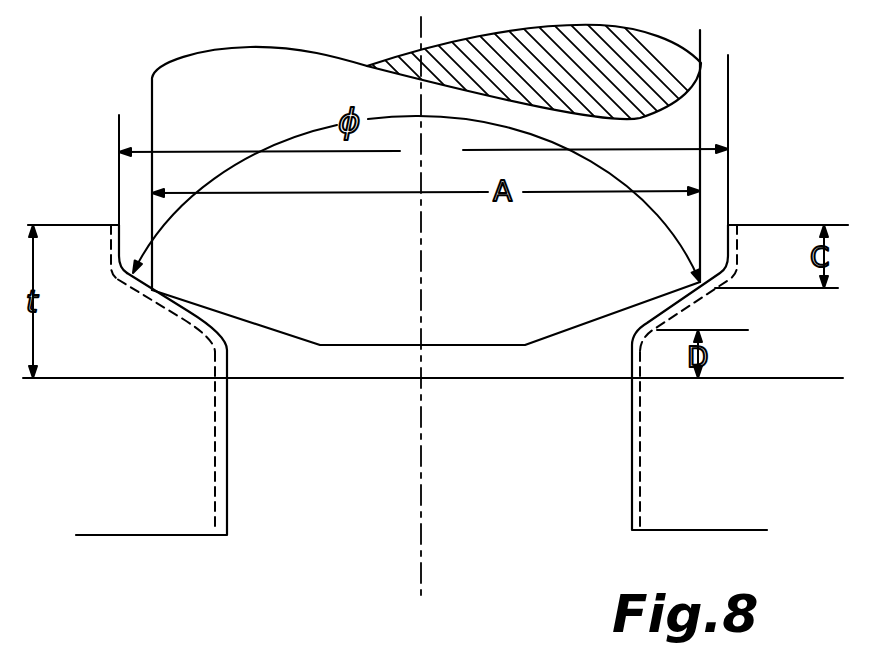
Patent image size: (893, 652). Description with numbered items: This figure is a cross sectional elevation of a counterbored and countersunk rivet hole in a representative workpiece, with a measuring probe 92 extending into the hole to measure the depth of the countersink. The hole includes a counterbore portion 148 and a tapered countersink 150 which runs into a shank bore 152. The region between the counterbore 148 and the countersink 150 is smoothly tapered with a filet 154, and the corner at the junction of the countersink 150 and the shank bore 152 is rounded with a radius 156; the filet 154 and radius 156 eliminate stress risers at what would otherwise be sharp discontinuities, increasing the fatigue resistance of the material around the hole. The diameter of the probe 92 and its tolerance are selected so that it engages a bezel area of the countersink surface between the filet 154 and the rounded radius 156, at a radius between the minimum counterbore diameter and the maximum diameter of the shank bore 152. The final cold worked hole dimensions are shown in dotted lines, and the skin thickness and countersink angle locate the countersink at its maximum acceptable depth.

The probe 92 is at (336, 263).
The counterbore portion 148 is at (123, 238).
The tapered countersink 150 is at (184, 307).
The shank bore 152 is at (227, 473).
The filet 154 is at (724, 283).
The radius 156 is at (645, 329).